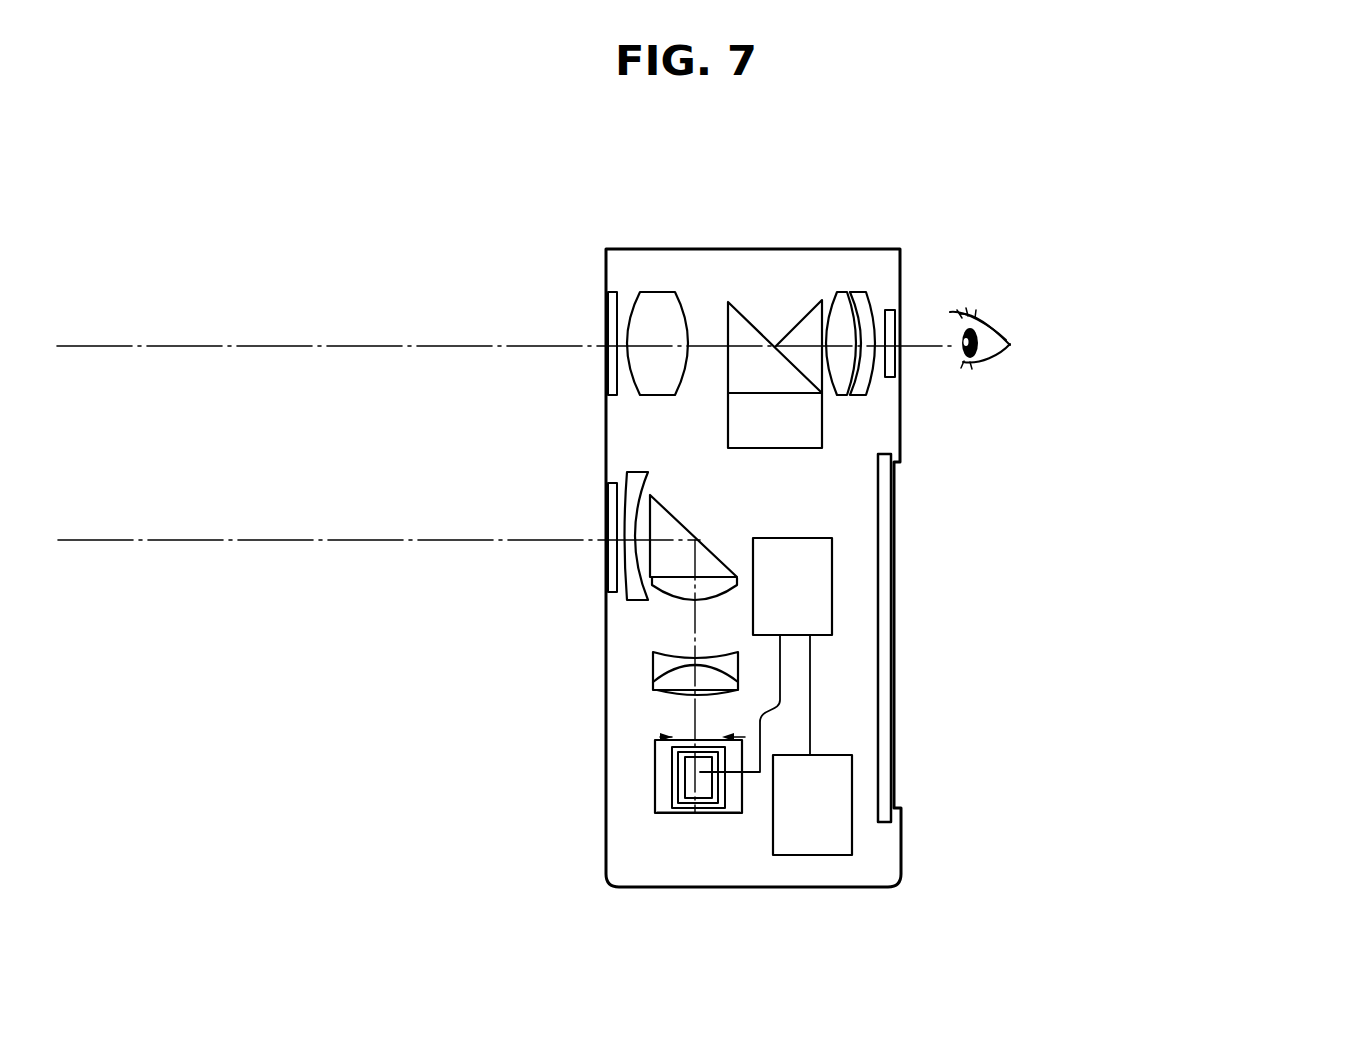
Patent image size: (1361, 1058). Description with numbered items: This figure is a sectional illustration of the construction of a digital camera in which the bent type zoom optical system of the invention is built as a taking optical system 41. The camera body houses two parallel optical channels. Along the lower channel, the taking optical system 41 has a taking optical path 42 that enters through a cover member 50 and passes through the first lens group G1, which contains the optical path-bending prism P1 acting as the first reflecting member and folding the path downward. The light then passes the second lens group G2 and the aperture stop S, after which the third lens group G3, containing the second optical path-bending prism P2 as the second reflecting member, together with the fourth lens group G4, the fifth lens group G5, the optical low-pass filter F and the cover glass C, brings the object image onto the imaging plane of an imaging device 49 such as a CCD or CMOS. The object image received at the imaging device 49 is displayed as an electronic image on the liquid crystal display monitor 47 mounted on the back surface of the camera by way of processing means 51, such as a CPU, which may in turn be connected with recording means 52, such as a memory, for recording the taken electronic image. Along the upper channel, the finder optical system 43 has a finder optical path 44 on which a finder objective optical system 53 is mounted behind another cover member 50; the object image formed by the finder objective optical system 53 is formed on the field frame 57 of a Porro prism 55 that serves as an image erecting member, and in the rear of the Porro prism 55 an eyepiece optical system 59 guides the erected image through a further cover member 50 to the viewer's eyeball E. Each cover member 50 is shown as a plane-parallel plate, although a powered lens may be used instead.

The taking optical system 41 is at (436, 625).
The taking optical path 42 is at (90, 543).
The finder optical system 43 is at (708, 291).
The finder optical path 44 is at (92, 345).
The liquid crystal display monitor 47 is at (889, 493).
The imaging device 49 is at (700, 813).
The cover member 50 is at (607, 317).
The processing means 51 is at (792, 537).
The recording means 52 is at (830, 755).
The finder objective optical system 53 is at (660, 292).
The Porro prism 55 is at (793, 329).
The field frame 57 is at (745, 393).
The eyepiece optical system 59 is at (1041, 295).
The eyeball E is at (988, 330).
The first lens group G1 is at (606, 603).
The second lens group G2 is at (628, 669).
The third lens group G3 is at (556, 777).
The fourth lens group G4 is at (556, 777).
The fifth lens group G5 is at (556, 777).
The optical low-pass filter F is at (556, 777).
The cover glass C is at (643, 784).
The first optical path-bending prism P1 is at (663, 522).
The second optical path-bending prism P2 is at (668, 813).
The aperture stop S is at (660, 737).